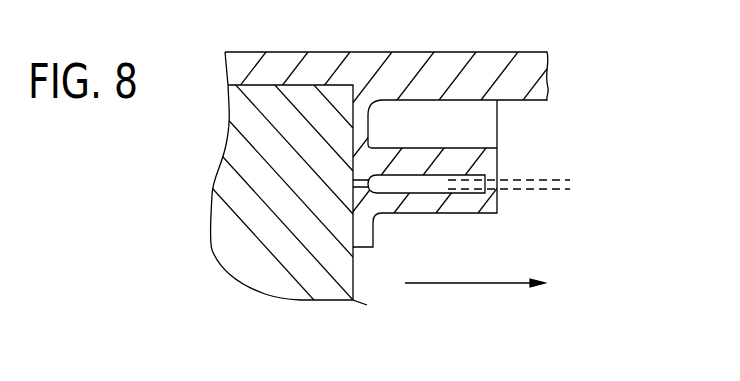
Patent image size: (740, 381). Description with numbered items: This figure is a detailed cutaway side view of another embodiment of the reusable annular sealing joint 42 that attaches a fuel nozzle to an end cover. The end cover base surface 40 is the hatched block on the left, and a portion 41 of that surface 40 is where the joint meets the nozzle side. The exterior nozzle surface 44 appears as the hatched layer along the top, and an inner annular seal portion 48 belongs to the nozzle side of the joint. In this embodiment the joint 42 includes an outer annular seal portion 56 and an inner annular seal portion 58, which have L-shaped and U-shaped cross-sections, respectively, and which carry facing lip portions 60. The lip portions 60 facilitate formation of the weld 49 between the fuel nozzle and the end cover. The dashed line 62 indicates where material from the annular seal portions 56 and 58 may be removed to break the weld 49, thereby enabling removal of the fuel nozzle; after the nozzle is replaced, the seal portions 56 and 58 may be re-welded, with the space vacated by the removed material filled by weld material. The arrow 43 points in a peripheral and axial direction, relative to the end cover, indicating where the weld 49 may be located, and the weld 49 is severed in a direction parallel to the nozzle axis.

The end cover base surface 40 is at (353, 273).
The portion of surface 41 is at (350, 128).
The annular sealing joint 42 is at (550, 203).
The axial direction 43 is at (425, 283).
The exterior nozzle surface 44 is at (525, 70).
The inner annular seal portion 48 is at (467, 5).
The weld 49 is at (495, 179).
The outer annular seal portion 56 is at (405, 205).
The inner annular seal portion 58 is at (407, 158).
The lip portions 60 is at (488, 181).
The line 62 is at (583, 168).